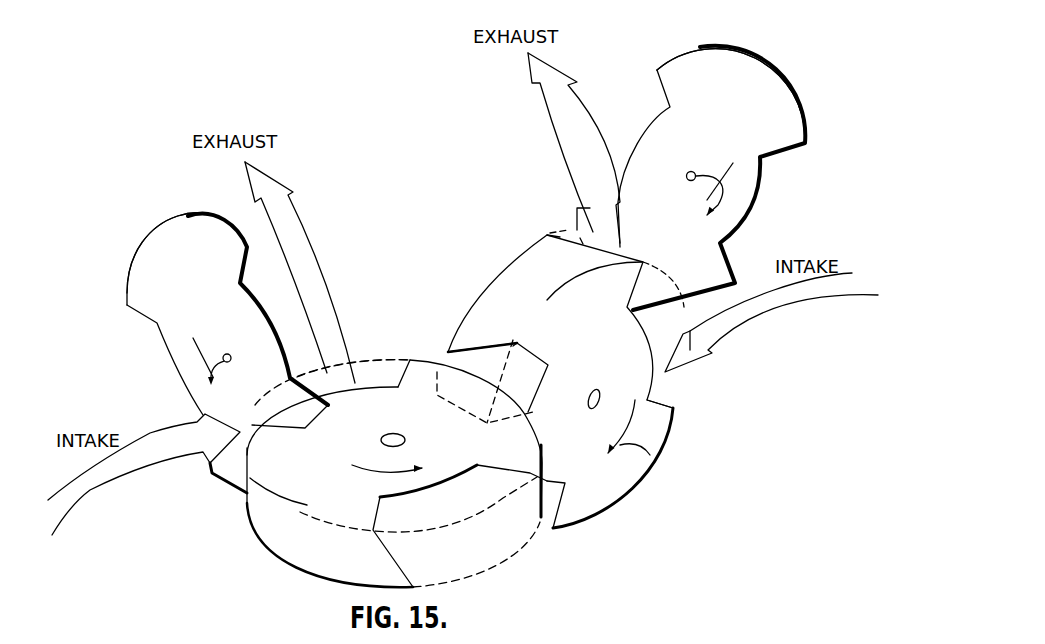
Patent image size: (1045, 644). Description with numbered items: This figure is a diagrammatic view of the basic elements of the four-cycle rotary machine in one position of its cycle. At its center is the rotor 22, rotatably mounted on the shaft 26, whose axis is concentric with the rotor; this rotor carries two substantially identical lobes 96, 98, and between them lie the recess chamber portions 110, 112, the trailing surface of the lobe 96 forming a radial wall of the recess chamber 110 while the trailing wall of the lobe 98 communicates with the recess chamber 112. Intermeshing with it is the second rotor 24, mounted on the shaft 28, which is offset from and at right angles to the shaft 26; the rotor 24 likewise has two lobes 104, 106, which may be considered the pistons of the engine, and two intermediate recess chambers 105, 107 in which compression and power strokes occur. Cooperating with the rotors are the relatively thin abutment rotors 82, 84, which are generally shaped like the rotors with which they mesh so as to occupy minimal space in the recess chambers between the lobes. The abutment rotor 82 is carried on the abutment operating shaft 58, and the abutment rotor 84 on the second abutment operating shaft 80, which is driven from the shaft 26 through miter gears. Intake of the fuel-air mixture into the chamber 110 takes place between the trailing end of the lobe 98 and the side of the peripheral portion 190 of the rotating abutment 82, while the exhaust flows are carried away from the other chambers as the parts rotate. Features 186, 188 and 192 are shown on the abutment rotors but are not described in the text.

The rotor 22 is at (310, 502).
The rotor 24 is at (650, 455).
The shaft 26 is at (406, 440).
The shaft 28 is at (594, 380).
The abutment operating shaft 58 is at (215, 362).
The second abutment operating shaft 80 is at (718, 178).
The abutment rotor 82 is at (187, 319).
The abutment rotor 84 is at (740, 117).
The lobe 96 is at (233, 487).
The lobe 98 is at (545, 450).
The lobe 104 is at (547, 300).
The recess chamber 105 is at (513, 346).
The lobe 106 is at (633, 488).
The recess chamber 107 is at (667, 390).
The recess chamber portion 110 is at (392, 364).
The recess chamber portion 112 is at (480, 513).
The housing tab 186 is at (733, 241).
The housing arcuate wall 188 is at (765, 70).
The peripheral portion 190 is at (298, 410).
The housing arcuate wall 192 is at (160, 277).